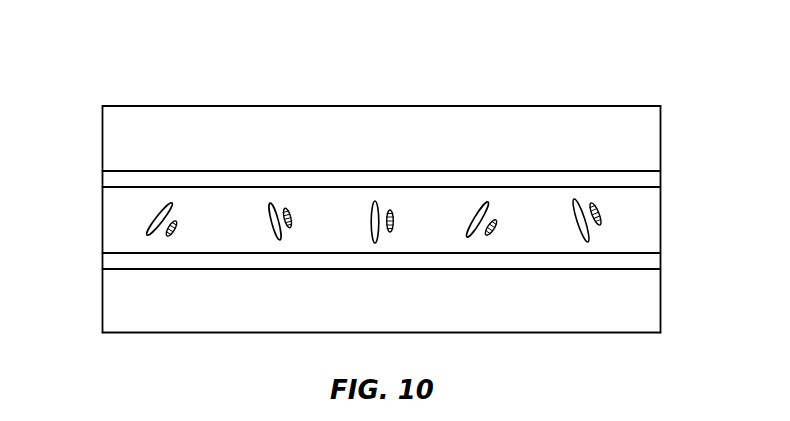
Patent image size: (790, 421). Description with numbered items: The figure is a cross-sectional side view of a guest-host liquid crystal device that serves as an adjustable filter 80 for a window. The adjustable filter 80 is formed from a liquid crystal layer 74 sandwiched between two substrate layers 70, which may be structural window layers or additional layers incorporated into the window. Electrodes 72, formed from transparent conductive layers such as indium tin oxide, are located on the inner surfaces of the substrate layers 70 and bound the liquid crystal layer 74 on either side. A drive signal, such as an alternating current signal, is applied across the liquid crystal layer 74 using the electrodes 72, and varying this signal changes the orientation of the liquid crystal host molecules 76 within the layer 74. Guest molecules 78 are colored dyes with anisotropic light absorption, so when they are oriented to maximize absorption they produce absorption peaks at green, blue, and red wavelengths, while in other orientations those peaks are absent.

The substrate layers 70 is at (114, 137).
The electrodes 72 is at (114, 180).
The liquid crystal layer 74 is at (94, 188).
The liquid crystal host molecules 76 is at (267, 208).
The guest molecules 78 is at (178, 230).
The adjustable filter 80 is at (556, 74).